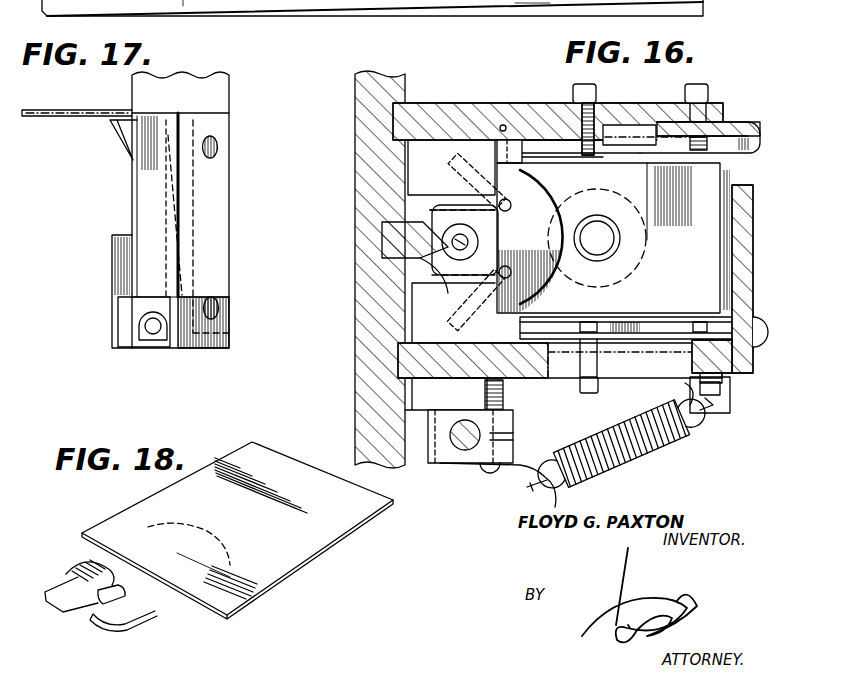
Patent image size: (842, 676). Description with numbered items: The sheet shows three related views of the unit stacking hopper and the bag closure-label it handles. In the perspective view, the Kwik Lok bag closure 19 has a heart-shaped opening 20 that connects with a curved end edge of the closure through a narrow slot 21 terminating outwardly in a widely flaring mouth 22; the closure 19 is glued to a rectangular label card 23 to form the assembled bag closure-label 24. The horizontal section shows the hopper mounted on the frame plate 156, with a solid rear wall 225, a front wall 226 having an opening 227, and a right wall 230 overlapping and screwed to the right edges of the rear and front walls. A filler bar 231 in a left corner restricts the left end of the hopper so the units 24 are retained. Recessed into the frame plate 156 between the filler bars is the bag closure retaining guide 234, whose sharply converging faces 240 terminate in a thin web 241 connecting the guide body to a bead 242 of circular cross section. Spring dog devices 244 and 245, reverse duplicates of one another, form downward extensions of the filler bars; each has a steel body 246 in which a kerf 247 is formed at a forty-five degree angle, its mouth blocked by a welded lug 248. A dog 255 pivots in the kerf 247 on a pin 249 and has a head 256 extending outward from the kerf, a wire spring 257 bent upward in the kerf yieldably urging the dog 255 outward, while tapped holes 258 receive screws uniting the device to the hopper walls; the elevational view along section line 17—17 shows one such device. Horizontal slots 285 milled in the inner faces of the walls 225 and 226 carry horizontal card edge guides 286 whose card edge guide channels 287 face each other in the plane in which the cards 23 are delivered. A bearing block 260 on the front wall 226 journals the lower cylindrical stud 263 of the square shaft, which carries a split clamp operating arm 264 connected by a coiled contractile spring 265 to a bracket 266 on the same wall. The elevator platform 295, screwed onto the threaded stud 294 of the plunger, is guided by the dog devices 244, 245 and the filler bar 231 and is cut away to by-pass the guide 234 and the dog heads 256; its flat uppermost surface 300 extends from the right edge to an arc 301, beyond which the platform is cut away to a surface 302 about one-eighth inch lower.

In FIG. 16, the section line 17 is at (494, 120).
In FIG. 17, the Kwik Lok bag closure 19 is at (72, 109).
In FIG. 18, the Kwik Lok bag closure 19 is at (153, 605).
In FIG. 18, the heart-shaped opening 20 is at (108, 590).
In FIG. 18, the narrow slot 21 is at (98, 590).
In FIG. 18, the widely flaring mouth 22 is at (93, 617).
In FIG. 18, the rectangular label card 23 is at (322, 530).
In FIG. 18, the assembled bag closure-label 24 is at (198, 612).
In FIG. 16, the frame plate 156 is at (374, 316).
In FIG. 16, the rear wall 225 is at (660, 103).
In FIG. 16, the front wall 226 is at (405, 358).
In FIG. 16, the opening 227 is at (680, 372).
In FIG. 16, the right wall 230 is at (754, 262).
In FIG. 17, the filler bar 231 is at (222, 92).
In FIG. 16, the bag closure retaining guide 234 is at (386, 246).
In FIG. 16, the sharply converging faces 240 is at (383, 230).
In FIG. 16, the thin web 241 is at (453, 300).
In FIG. 16, the bead 242 is at (470, 244).
In FIG. 17, the spring dog device 244 is at (235, 181).
In FIG. 16, the spring dog device 244 is at (430, 172).
In FIG. 16, the spring dog device 245 is at (432, 324).
In FIG. 17, the body 246 is at (226, 227).
In FIG. 17, the kerf 247 is at (190, 245).
In FIG. 17, the lug 248 is at (112, 267).
In FIG. 17, the pin 249 is at (153, 330).
In FIG. 17, the dog 255 is at (167, 140).
In FIG. 17, the head 256 is at (125, 137).
In FIG. 16, the head 256 is at (545, 302).
In FIG. 17, the wire spring 257 is at (182, 297).
In FIG. 17, the tapped holes 258 is at (217, 146).
In FIG. 16, the bearing block 260 is at (440, 392).
In FIG. 16, the cylindrical stud 263 is at (466, 440).
In FIG. 16, the split clamp operating arm 264 is at (513, 416).
In FIG. 16, the coiled contractile spring 265 is at (656, 452).
In FIG. 16, the bracket 266 is at (733, 408).
In FIG. 16, the horizontal slots 285 is at (505, 125).
In FIG. 16, the horizontal card edge guides 286 is at (741, 122).
In FIG. 16, the card edge guide channels 287 is at (618, 141).
In FIG. 16, the threaded stud 294 is at (603, 243).
In FIG. 16, the elevator platform 295 is at (702, 190).
In FIG. 16, the uppermost surface 300 is at (613, 238).
In FIG. 16, the arc 301 is at (560, 262).
In FIG. 16, the surface 302 is at (573, 209).